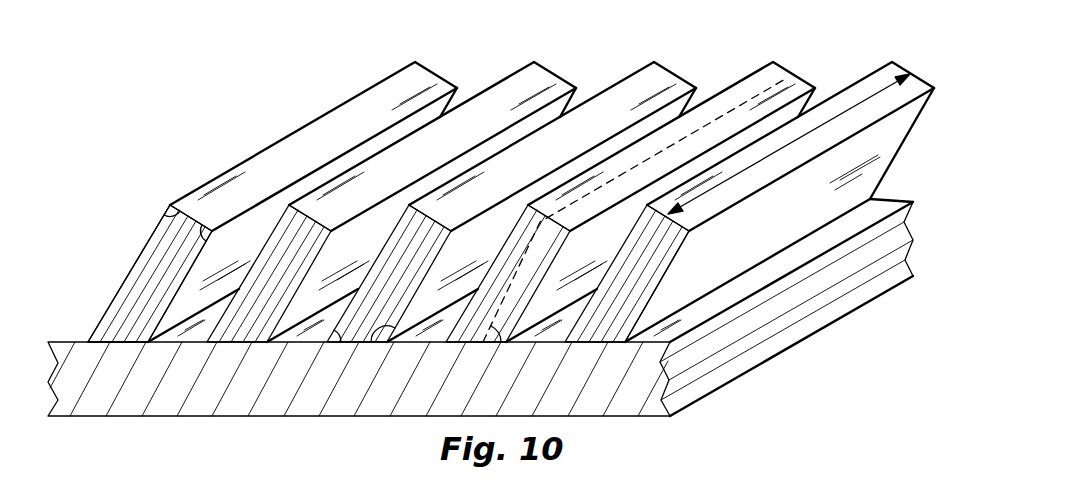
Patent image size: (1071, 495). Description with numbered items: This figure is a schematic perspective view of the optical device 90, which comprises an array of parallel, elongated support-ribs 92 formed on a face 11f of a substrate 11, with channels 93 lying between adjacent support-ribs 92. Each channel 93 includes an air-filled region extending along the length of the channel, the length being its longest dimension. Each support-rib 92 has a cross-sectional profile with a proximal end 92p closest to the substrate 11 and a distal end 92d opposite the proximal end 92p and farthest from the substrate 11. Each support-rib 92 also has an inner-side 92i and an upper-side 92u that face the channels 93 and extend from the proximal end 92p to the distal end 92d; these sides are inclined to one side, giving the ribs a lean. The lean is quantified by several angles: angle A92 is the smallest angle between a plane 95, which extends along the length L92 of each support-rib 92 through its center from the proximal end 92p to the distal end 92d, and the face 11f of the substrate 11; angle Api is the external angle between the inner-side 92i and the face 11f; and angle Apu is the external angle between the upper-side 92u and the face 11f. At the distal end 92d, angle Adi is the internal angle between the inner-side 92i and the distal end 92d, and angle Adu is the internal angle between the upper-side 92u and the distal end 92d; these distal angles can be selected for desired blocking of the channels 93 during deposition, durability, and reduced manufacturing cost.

The optical device 90 is at (486, 220).
The support-rib 92 is at (481, 214).
The upper-side 92u is at (145, 237).
The distal end 92d is at (305, 152).
The inner-side 92i is at (779, 215).
The proximal end 92p is at (123, 344).
The channel 93 is at (463, 95).
The plane 95 is at (785, 78).
The substrate 11 is at (646, 393).
The face of the substrate 11f is at (882, 208).
The length of the support-rib L92 is at (789, 144).
The angle Adu is at (168, 204).
The angle Adi is at (200, 228).
The angle Apu is at (320, 330).
The angle Api is at (407, 322).
The angle A92 is at (498, 336).